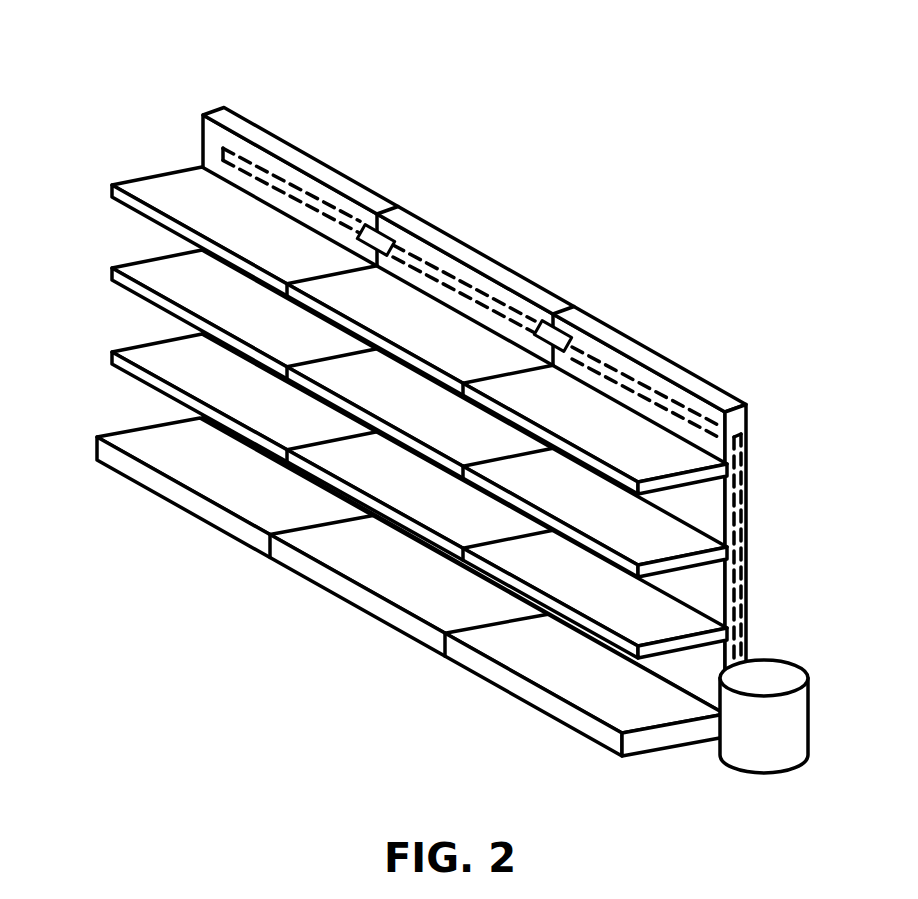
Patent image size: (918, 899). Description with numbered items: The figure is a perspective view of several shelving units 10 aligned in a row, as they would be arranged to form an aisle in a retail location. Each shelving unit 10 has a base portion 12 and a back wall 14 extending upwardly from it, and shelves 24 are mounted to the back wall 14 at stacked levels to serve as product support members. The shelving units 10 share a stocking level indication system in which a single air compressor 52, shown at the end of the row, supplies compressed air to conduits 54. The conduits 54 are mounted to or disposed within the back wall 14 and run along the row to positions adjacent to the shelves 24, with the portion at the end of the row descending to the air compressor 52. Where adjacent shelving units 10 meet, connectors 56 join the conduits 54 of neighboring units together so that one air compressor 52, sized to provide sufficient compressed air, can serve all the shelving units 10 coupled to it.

The shelving unit 10 is at (252, 124).
The base portion 12 is at (202, 477).
The back wall 14 is at (278, 137).
The shelves 24 is at (112, 190).
The air compressor 52 is at (753, 773).
The conduits 54 is at (293, 187).
The connectors 56 is at (365, 226).